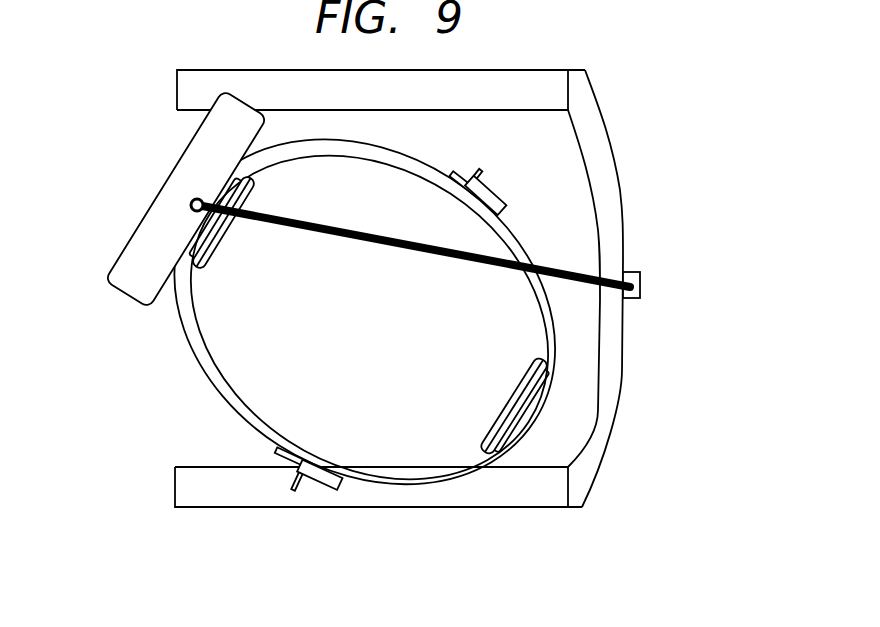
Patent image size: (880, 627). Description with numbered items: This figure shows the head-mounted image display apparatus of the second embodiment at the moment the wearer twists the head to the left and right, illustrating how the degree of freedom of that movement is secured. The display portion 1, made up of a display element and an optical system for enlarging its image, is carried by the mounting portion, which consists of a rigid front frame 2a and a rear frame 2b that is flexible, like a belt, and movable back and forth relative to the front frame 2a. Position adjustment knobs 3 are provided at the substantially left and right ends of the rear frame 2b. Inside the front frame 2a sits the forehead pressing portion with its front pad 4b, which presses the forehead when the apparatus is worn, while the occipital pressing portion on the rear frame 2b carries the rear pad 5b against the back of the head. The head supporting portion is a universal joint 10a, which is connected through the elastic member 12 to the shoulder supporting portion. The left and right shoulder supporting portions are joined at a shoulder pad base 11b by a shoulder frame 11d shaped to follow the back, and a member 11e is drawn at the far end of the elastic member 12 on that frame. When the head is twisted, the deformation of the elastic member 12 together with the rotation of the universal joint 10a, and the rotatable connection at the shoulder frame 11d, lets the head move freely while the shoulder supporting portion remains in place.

The display portion 1 is at (203, 142).
The front frame 2a is at (196, 354).
The rear frame 2b is at (452, 478).
The position adjustment knobs 3 is at (480, 170).
The front pad 4b is at (217, 243).
The rear pad 5b is at (507, 412).
The universal joint 10a is at (190, 205).
The shoulder pad base 11b is at (242, 487).
The shoulder frame 11d is at (607, 372).
The stopper block 11e is at (640, 285).
The elastic member 12 is at (410, 253).